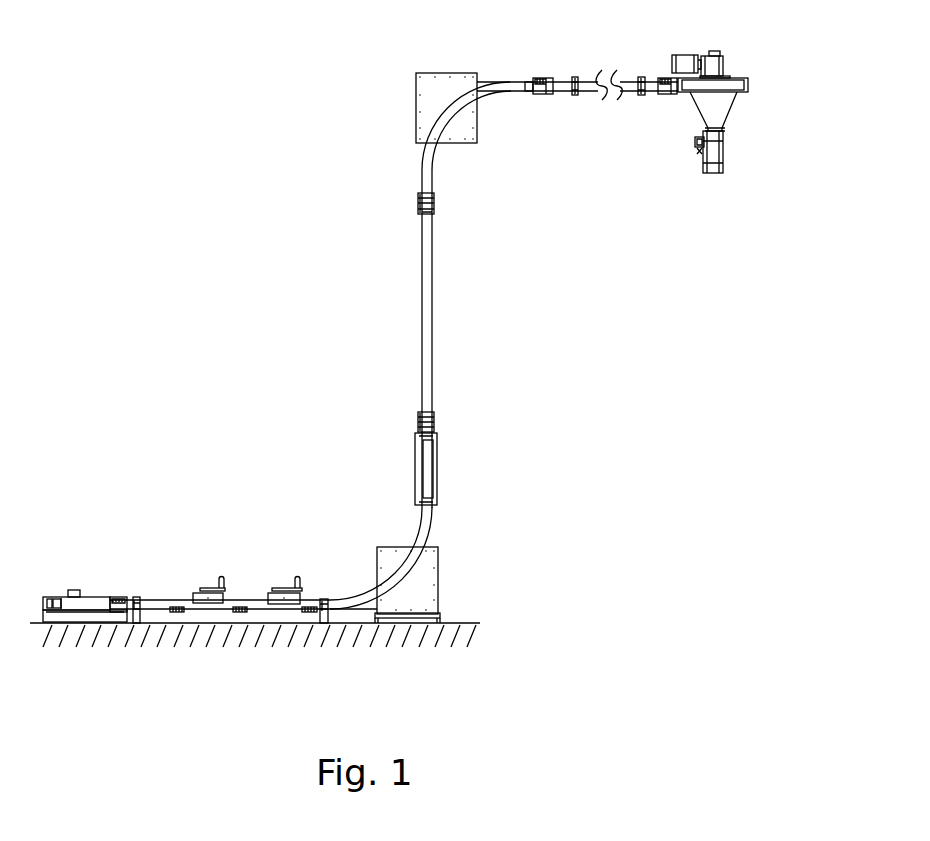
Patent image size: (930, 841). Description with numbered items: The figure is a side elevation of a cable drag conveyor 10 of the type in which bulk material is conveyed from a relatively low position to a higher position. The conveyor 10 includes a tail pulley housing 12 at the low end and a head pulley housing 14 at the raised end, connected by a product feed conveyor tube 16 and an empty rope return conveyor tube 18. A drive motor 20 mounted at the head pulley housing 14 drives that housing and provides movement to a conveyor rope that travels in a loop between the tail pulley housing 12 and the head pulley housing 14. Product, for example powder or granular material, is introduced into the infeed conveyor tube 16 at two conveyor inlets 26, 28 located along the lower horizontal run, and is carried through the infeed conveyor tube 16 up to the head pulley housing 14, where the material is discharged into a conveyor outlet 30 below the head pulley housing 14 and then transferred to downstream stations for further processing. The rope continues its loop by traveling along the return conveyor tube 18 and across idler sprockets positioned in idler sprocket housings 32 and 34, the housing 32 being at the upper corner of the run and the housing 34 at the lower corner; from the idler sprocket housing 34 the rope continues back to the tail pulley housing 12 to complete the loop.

The cable drag conveyor 10 is at (268, 338).
The tail pulley housing 12 is at (88, 603).
The head pulley housing 14 is at (700, 85).
The product feed conveyor tube 16 is at (561, 90).
The empty rope return conveyor tube 18 is at (486, 84).
The drive motor 20 is at (686, 62).
The conveyor inlet 26 is at (215, 600).
The conveyor inlet 28 is at (277, 600).
The conveyor outlet 30 is at (712, 118).
The idler sprocket housing 32 is at (426, 101).
The idler sprocket housing 34 is at (420, 582).